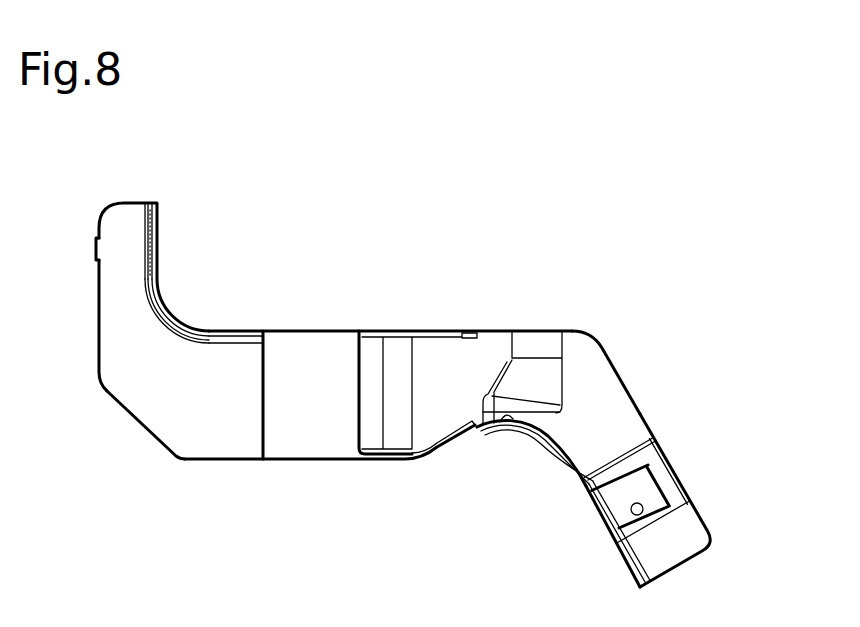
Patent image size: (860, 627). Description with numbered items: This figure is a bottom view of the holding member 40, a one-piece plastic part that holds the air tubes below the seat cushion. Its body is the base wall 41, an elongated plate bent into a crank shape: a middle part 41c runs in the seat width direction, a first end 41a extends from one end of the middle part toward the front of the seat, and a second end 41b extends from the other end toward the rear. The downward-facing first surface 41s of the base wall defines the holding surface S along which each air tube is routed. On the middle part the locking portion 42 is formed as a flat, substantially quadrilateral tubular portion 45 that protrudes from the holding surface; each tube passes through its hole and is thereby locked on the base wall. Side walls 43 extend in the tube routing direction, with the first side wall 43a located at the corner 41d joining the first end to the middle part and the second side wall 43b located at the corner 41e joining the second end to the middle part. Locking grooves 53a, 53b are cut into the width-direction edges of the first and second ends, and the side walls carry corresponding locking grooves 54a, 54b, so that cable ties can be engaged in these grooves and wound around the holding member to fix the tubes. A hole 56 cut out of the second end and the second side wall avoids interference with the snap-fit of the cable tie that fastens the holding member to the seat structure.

The holding member 40 is at (729, 152).
The base wall 41 is at (99, 378).
The first end 41a is at (133, 211).
The second end 41b is at (670, 562).
The middle part 41c is at (252, 459).
The corner 41d is at (133, 408).
The corner 41e is at (588, 343).
The first surface 41s is at (200, 383).
The locking portion 42 is at (333, 329).
The tubular portion 45 is at (418, 392).
The side walls 43 is at (177, 311).
The first side wall 43a is at (170, 312).
The second side wall 43b is at (520, 432).
The locking groove 53a is at (96, 243).
The locking groove 53b is at (668, 480).
The locking groove 54a is at (160, 248).
The locking groove 54b is at (597, 505).
The hole 56 is at (638, 510).